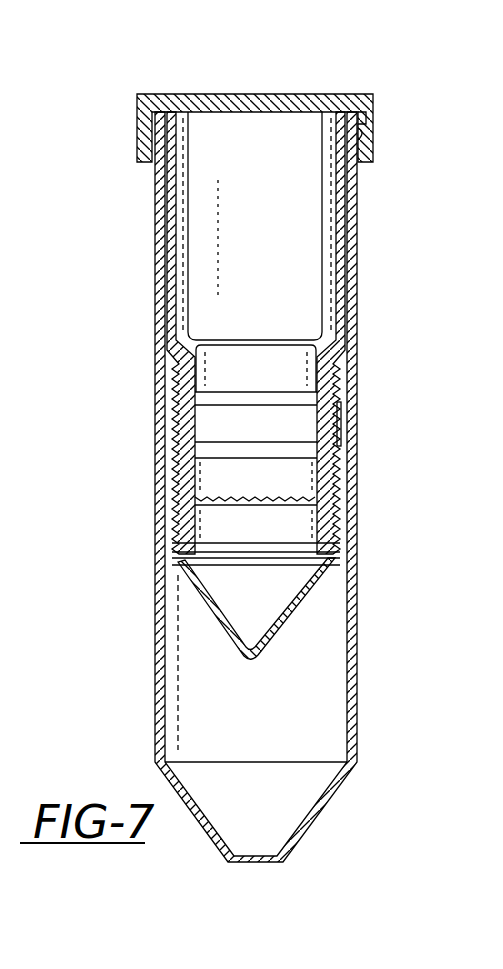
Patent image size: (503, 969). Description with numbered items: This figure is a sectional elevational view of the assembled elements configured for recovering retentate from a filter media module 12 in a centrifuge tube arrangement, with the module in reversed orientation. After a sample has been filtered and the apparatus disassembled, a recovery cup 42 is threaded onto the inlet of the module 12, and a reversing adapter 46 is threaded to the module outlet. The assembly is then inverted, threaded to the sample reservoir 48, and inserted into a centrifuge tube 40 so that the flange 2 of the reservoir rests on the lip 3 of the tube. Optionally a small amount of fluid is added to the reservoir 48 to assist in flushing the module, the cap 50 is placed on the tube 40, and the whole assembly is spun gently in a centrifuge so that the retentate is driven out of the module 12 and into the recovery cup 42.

The flange 2 is at (362, 108).
The lip 3 is at (358, 118).
The filter media module 12 is at (350, 477).
The centrifuge tube 40 is at (360, 721).
The recovery cup 42 is at (316, 616).
The reversing adapter 46 is at (358, 427).
The sample reservoir 48 is at (347, 266).
The cap 50 is at (372, 102).